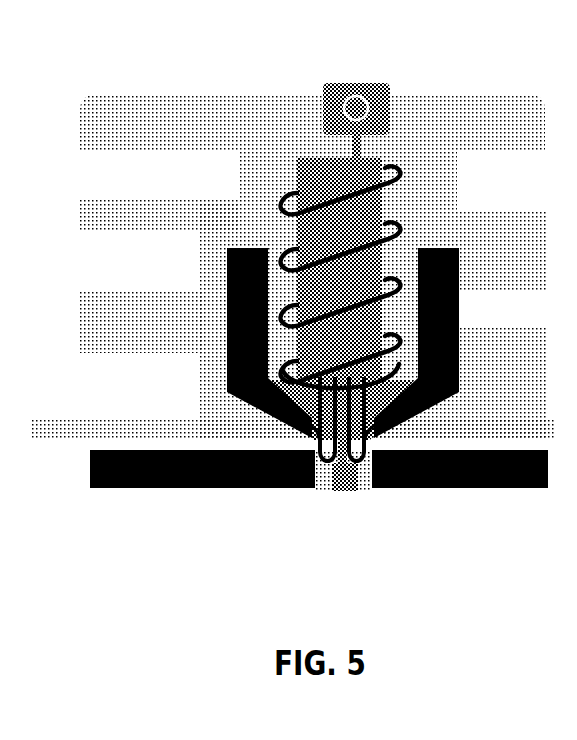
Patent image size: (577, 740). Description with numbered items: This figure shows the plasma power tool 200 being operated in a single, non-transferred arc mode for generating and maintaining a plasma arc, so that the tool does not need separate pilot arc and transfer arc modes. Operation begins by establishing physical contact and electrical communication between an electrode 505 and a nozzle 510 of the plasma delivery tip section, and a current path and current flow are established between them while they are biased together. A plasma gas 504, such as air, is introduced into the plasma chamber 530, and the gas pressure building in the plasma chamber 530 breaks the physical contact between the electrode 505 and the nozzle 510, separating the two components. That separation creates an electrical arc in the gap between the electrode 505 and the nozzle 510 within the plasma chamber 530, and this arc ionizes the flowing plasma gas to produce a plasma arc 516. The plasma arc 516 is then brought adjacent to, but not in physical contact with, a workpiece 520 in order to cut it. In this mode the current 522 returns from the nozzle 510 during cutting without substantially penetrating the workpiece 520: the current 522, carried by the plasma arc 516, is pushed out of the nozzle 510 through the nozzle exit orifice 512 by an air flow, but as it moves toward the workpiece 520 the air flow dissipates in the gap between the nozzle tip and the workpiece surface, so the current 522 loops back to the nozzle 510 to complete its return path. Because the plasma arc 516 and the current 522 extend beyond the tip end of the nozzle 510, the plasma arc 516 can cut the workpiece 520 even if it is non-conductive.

The plasma power tool 200 is at (262, 126).
The electrode 505 is at (315, 176).
The plasma gas 504 is at (400, 176).
The nozzle 510 is at (240, 258).
The plasma chamber 530 is at (280, 297).
The plasma arc 516 is at (352, 398).
The nozzle exit orifice 512 is at (357, 410).
The workpiece 520 is at (159, 450).
The current 522 is at (373, 505).